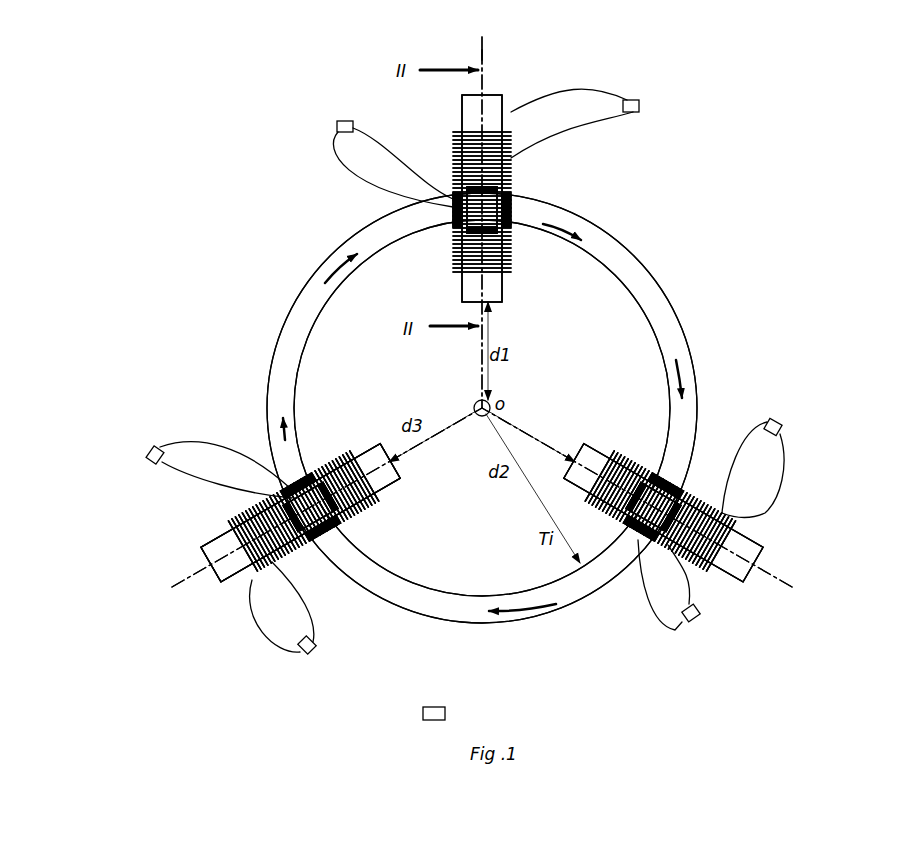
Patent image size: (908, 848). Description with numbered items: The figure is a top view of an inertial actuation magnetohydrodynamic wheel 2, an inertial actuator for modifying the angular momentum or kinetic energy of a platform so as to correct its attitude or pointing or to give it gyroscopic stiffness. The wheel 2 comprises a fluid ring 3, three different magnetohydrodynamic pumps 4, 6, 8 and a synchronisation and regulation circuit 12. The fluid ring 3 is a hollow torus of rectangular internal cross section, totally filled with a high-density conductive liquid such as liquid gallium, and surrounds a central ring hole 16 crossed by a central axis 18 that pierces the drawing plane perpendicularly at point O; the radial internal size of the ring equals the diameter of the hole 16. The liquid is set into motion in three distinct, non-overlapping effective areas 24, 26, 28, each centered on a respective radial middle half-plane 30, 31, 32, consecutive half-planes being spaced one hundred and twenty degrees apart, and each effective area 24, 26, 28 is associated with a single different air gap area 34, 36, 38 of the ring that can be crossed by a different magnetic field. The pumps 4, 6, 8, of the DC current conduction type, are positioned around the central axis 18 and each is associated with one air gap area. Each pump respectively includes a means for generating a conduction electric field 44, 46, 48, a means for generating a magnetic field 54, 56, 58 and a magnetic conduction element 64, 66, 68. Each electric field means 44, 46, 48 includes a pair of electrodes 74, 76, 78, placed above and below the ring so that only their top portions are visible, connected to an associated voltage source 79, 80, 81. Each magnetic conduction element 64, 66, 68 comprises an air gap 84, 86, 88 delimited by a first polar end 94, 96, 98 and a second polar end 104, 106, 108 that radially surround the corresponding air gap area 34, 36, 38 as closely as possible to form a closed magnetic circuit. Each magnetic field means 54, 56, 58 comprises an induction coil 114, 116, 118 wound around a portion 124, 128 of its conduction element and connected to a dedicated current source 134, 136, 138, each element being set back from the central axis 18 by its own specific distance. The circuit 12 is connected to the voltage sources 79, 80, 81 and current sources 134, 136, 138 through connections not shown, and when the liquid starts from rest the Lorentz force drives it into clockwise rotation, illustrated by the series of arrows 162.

The inertial actuation magnetohydrodynamic wheel 2 is at (272, 205).
The fluid ring 3 is at (298, 300).
The magnetohydrodynamic pump 4 is at (434, 146).
The magnetohydrodynamic pump 6 is at (792, 555).
The magnetohydrodynamic pump 8 is at (232, 600).
The synchronisation and regulation circuit 12 is at (423, 713).
The central ring hole 16 is at (374, 365).
The central axis 18 is at (479, 416).
The effective area 24 is at (500, 196).
The effective area 26 is at (655, 545).
The effective area 28 is at (286, 496).
The radial middle half-plane 30 is at (485, 52).
The radial middle half-plane 31 is at (786, 596).
The radial middle half-plane 32 is at (196, 585).
The air gap area 34 is at (512, 232).
The air gap area 36 is at (628, 502).
The air gap area 38 is at (300, 542).
The means for generating a specific electric field for conduction 44 is at (322, 127).
The means for generating a specific electric field for conduction 46 is at (641, 624).
The means for generating a specific electric field for conduction 48 is at (152, 430).
The means for generating a specific magnetic field 54 is at (650, 118).
The means for generating a specific magnetic field 56 is at (802, 420).
The means for generating a specific magnetic field 58 is at (268, 662).
The magnetic conduction element 64 is at (466, 302).
The magnetic conduction element 66 is at (602, 456).
The magnetic conduction element 68 is at (388, 485).
The pair of electrodes 74 is at (455, 222).
The pair of electrodes 76 is at (658, 480).
The pair of electrodes 78 is at (340, 522).
The voltage source 79 is at (345, 120).
The voltage source 80 is at (696, 622).
The voltage source 81 is at (148, 450).
The air gap 84 is at (500, 180).
The air gap 86 is at (705, 566).
The air gap 88 is at (338, 458).
The first polar end 94 is at (456, 166).
The first polar end 96 is at (700, 500).
The first polar end 98 is at (283, 560).
The second polar end 104 is at (460, 246).
The second polar end 106 is at (632, 470).
The second polar end 108 is at (358, 503).
The induction coil 114 is at (502, 282).
The induction coil 116 is at (598, 480).
The induction coil 118 is at (356, 434).
The portion of the magnetic conduction element 124 is at (462, 130).
The portion of the magnetic conduction element 128 is at (226, 546).
The current source 134 is at (634, 100).
The current source 136 is at (781, 430).
The current source 138 is at (314, 652).
The arrows 162 is at (343, 264).